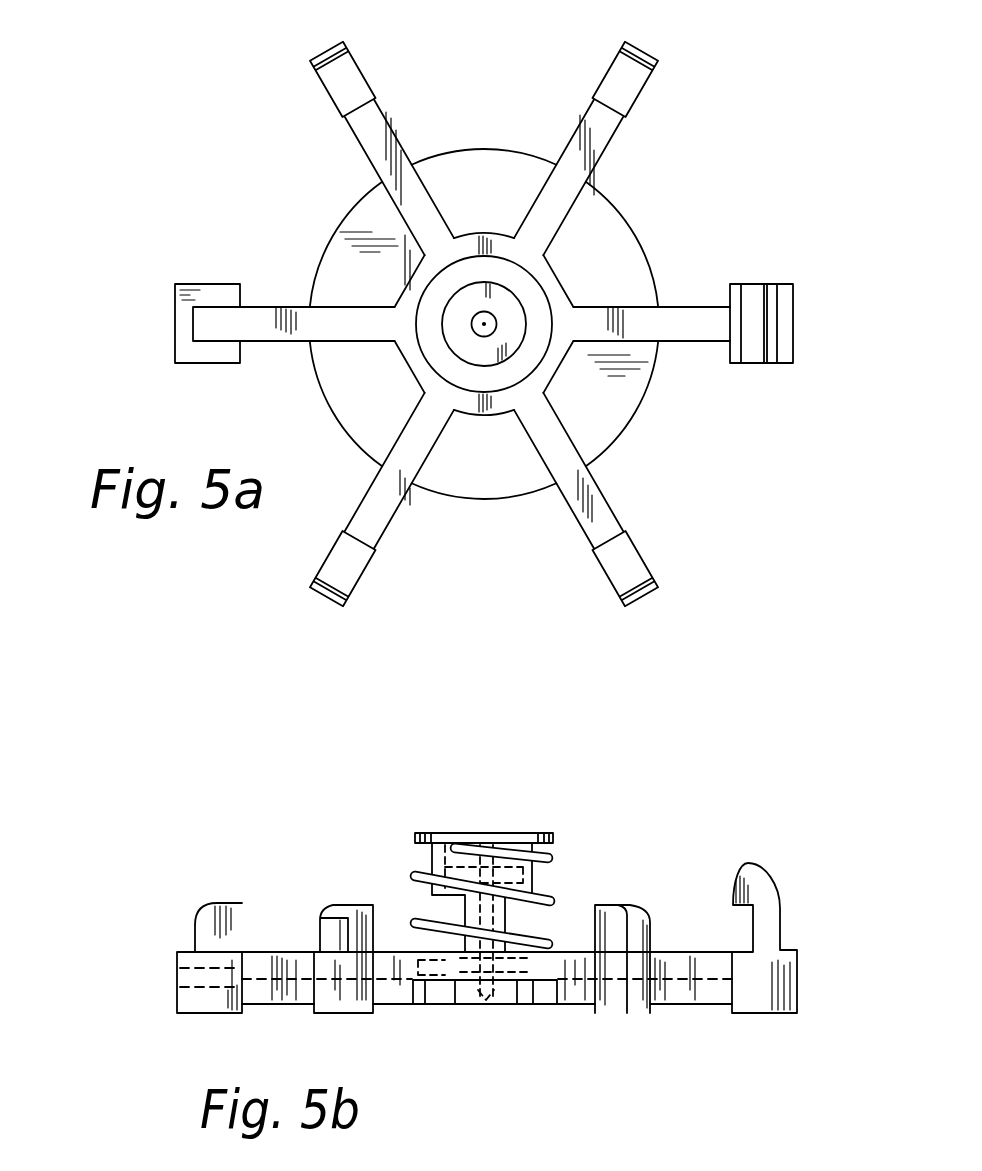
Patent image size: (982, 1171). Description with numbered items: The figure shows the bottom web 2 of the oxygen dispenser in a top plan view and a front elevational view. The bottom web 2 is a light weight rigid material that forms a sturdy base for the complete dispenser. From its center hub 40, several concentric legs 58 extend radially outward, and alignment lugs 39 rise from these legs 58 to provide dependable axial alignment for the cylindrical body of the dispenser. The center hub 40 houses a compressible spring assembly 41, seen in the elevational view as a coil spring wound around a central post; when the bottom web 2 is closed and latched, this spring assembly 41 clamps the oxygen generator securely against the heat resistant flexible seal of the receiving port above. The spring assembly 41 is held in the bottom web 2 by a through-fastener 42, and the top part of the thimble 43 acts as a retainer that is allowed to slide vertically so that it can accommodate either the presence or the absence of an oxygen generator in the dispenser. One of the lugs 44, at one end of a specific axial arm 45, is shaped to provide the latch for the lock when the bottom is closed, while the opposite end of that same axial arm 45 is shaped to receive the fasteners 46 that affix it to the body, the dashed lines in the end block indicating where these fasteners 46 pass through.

In FIG. 5A, the bottom web 2 is at (718, 86).
In FIG. 5B, the bottom web 2 is at (722, 833).
In FIG. 5B, the alignment lugs 39 is at (340, 896).
In FIG. 5A, the center hub 40 is at (556, 290).
In FIG. 5B, the compressible spring assembly 41 is at (570, 852).
In FIG. 5B, the through-fastener 42 is at (508, 1011).
In FIG. 5B, the thimble 43 is at (504, 822).
In FIG. 5A, the lug 44 is at (800, 302).
In FIG. 5B, the lug 44 is at (790, 900).
In FIG. 5A, the axial arm 45 is at (207, 278).
In FIG. 5B, the axial arm 45 is at (172, 950).
In FIG. 5B, the fasteners 46 is at (168, 987).
In FIG. 5A, the concentric legs 58 is at (596, 112).